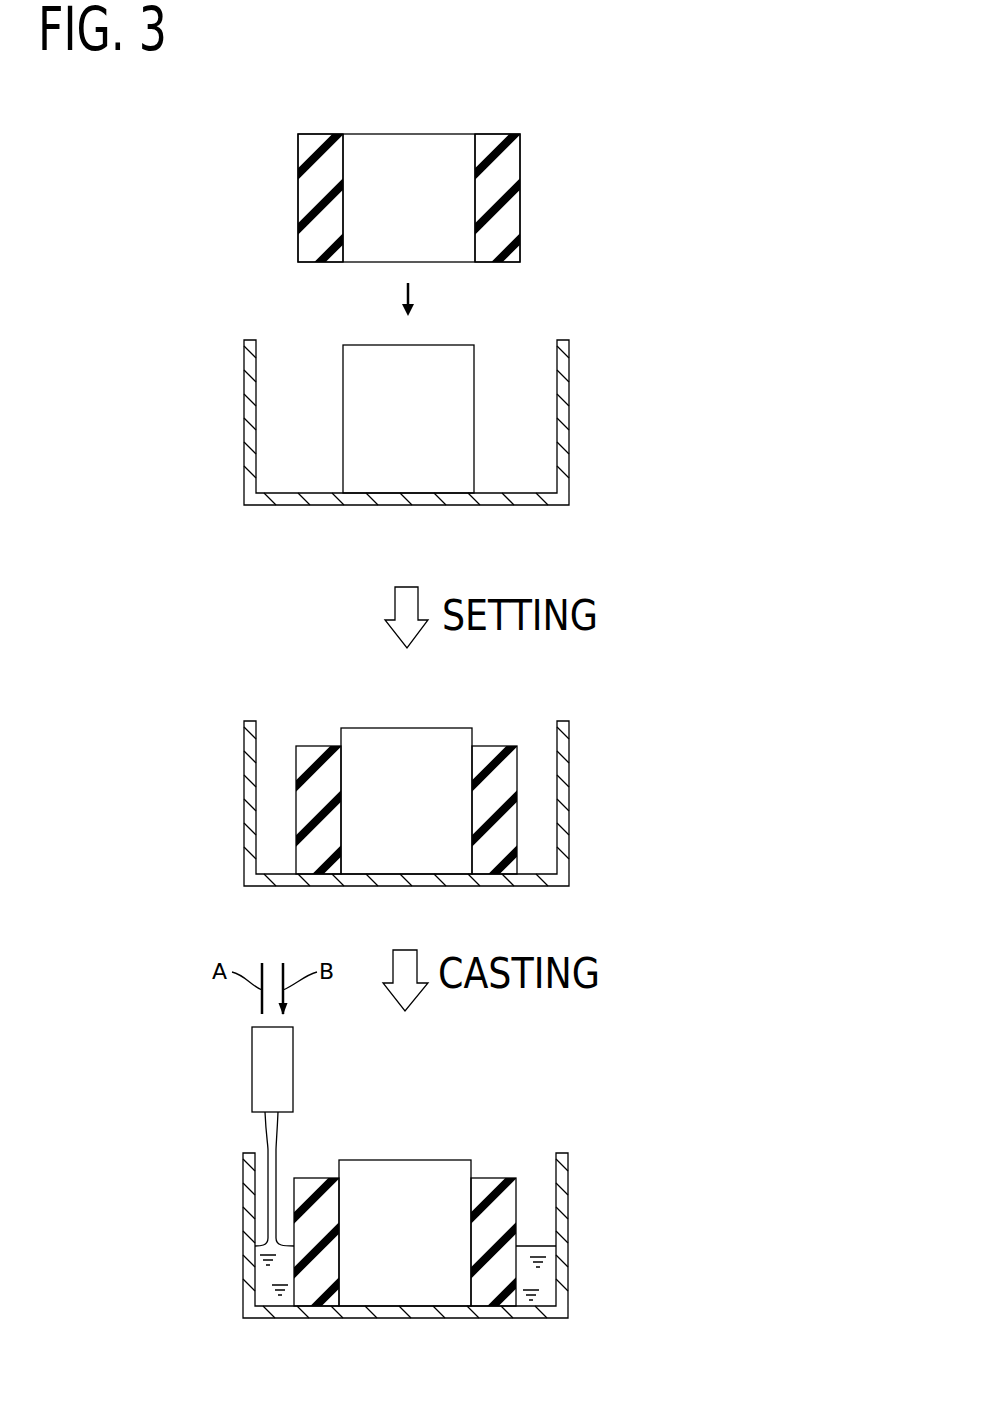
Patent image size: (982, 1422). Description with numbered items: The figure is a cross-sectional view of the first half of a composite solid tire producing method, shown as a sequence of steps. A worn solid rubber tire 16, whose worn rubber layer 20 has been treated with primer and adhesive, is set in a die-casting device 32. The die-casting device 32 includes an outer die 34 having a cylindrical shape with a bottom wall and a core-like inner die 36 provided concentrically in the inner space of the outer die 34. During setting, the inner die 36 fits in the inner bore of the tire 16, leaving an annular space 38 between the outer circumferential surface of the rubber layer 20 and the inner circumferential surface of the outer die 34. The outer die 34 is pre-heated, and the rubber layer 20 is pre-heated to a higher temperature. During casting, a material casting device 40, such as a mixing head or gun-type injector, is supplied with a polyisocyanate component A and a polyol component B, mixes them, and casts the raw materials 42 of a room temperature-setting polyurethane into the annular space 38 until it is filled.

The worn solid rubber tire 16 is at (540, 148).
The rubber layer 20 is at (315, 185).
The die-casting device 32 is at (454, 782).
The outer die 34 is at (567, 418).
The inner die 36 is at (370, 422).
The annular space 38 is at (535, 810).
The material casting device 40 is at (302, 1072).
The raw materials 42 is at (270, 1145).